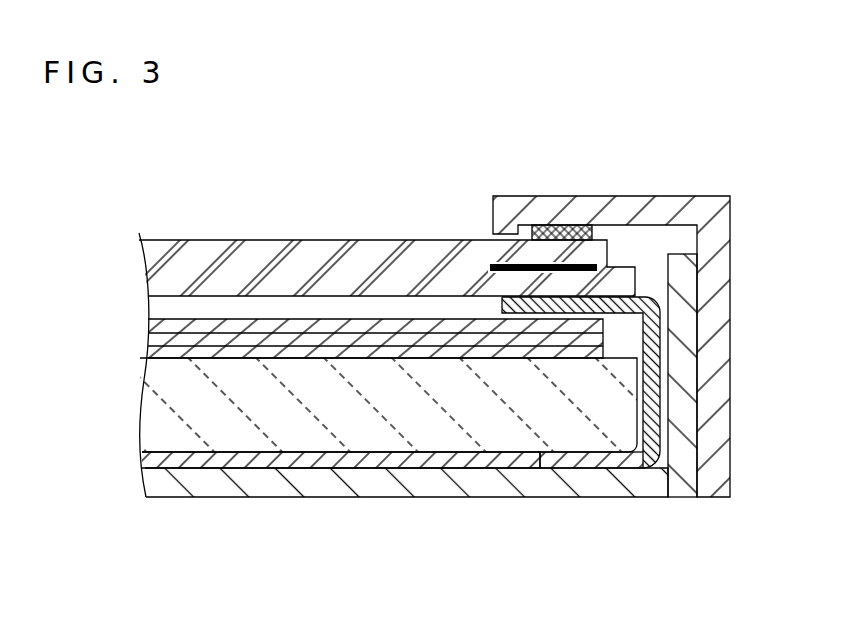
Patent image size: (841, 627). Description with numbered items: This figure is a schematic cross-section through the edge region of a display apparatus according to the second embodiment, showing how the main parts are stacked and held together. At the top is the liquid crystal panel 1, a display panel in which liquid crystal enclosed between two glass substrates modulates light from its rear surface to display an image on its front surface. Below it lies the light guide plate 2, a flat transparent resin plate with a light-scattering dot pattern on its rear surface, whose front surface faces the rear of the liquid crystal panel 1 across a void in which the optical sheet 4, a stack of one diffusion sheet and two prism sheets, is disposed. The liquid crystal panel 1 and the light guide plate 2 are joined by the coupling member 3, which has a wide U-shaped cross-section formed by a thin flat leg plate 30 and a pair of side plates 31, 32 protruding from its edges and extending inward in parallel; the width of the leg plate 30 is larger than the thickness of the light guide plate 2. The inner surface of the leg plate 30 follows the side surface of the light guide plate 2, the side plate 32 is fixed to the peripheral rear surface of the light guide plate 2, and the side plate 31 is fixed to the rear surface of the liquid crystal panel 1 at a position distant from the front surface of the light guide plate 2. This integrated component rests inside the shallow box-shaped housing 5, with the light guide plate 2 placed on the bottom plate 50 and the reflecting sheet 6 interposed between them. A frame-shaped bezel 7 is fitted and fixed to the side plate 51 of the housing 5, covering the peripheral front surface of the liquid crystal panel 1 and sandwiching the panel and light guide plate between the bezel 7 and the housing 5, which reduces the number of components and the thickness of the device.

The liquid crystal panel 1 is at (212, 247).
The light guide plate 2 is at (152, 406).
The coupling member 3 is at (662, 328).
The leg plate 30 is at (650, 348).
The side plate 31 is at (500, 298).
The side plate 32 is at (597, 466).
The optical sheet 4 is at (157, 322).
The housing 5 is at (427, 508).
The bottom plate 50 is at (552, 490).
The side plate 51 is at (688, 408).
The reflecting sheet 6 is at (152, 462).
The bezel 7 is at (656, 201).